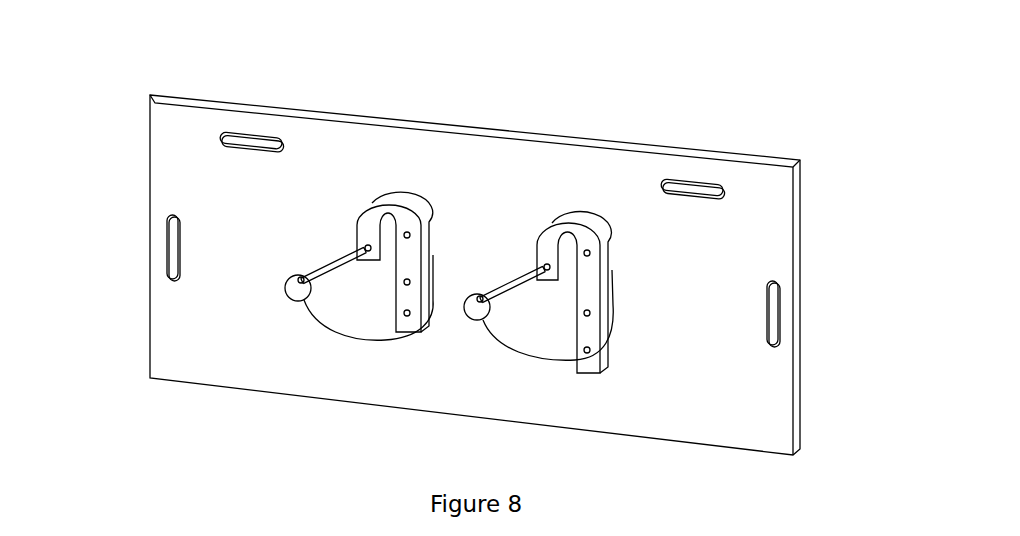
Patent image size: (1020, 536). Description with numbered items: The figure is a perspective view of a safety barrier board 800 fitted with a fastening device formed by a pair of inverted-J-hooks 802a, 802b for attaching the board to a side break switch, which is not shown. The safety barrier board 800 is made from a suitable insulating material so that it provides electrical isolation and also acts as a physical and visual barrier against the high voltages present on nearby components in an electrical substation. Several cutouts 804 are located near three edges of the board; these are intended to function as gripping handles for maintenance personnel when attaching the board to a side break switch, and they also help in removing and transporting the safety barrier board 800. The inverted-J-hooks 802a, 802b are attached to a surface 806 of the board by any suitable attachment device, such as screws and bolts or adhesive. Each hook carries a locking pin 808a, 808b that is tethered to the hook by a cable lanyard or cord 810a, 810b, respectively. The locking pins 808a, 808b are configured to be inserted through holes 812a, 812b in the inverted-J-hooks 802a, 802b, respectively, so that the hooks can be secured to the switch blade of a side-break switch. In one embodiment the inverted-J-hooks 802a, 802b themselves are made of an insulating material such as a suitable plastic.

The safety barrier board 800 is at (595, 93).
The inverted-J-hook 802a is at (373, 215).
The inverted-J-hook 802b is at (547, 248).
The cutouts 804 is at (256, 141).
The surface 806 is at (762, 190).
The locking pin 808a is at (320, 252).
The locking pin 808b is at (510, 280).
The cable lanyard or cord 810a is at (357, 340).
The cable lanyard or cord 810b is at (493, 338).
The hole 812a is at (367, 244).
The hole 812b is at (588, 254).